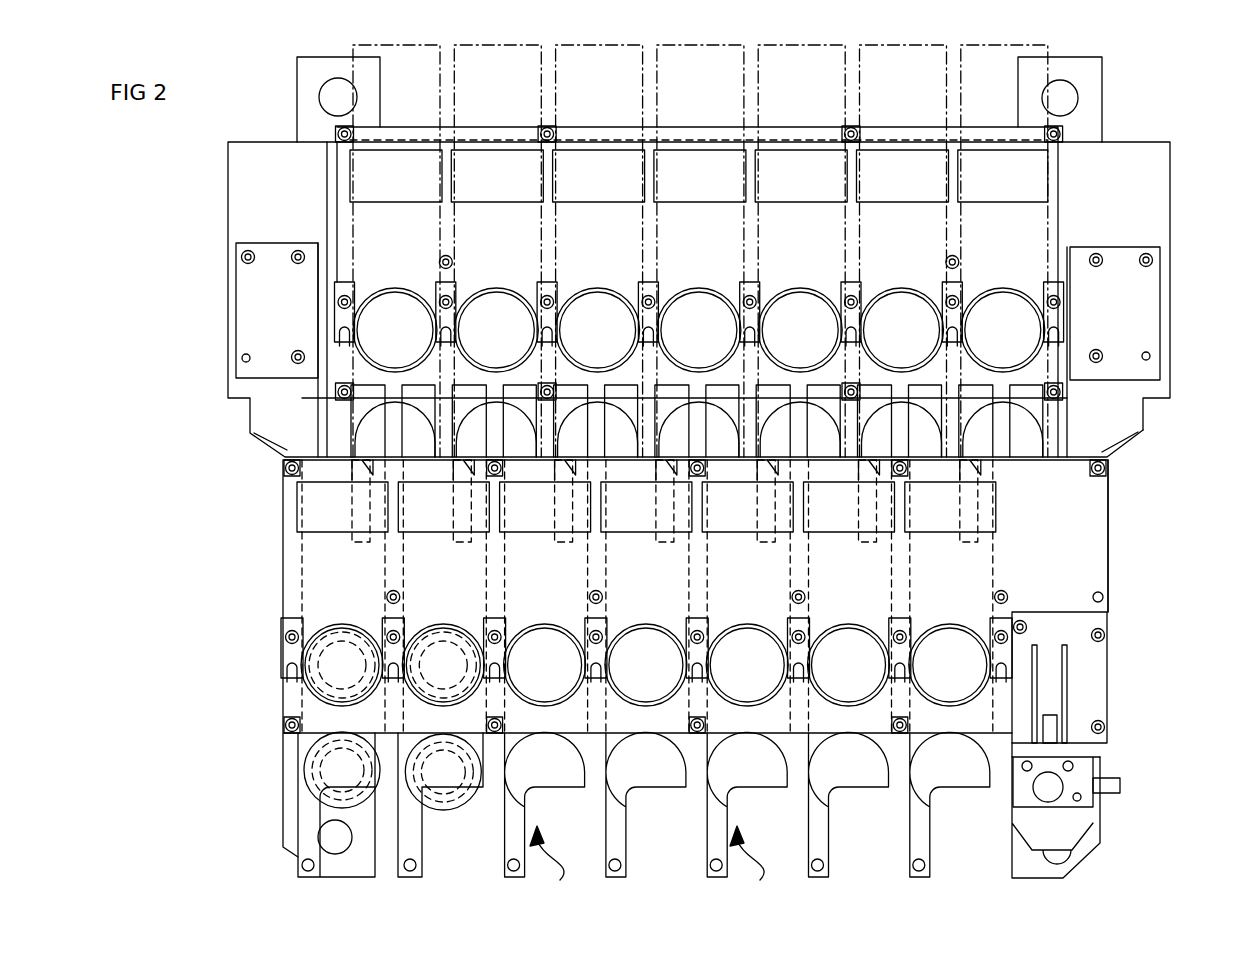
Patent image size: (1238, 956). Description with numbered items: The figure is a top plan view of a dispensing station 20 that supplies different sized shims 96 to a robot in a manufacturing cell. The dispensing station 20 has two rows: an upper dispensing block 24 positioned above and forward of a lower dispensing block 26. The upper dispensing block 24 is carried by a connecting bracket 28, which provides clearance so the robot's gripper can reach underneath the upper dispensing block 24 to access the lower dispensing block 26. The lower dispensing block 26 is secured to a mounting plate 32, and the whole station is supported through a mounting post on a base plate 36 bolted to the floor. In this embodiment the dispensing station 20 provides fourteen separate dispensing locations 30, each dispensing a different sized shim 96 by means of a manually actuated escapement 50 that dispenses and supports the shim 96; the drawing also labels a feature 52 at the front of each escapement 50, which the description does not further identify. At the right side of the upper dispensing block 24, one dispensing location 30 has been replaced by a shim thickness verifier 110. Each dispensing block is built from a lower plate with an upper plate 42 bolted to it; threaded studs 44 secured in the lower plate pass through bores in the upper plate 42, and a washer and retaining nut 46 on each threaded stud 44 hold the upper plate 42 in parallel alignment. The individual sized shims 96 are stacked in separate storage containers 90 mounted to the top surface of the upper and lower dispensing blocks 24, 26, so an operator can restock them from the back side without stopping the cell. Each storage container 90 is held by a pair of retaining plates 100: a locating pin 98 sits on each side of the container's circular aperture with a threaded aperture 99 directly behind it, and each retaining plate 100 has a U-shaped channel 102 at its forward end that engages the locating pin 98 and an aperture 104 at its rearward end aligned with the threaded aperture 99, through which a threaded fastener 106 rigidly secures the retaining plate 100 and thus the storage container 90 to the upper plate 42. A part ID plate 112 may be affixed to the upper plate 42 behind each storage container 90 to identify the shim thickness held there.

The dispensing station 20 is at (246, 468).
The upper dispensing block 24 is at (276, 752).
The lower dispensing block 26 is at (328, 212).
The connecting bracket 28 is at (260, 392).
The dispensing location 30 is at (658, 859).
The mounting plate 32 is at (1153, 233).
The base plate 36 is at (305, 63).
The upper plate 42 is at (1051, 243).
The threaded stud 44 is at (1105, 490).
The retaining nut 46 is at (1105, 467).
The manually actuated escapement 50 is at (720, 97).
The slot 52 is at (563, 782).
The storage container 90 is at (615, 288).
The shim 96 is at (307, 657).
The locating pin 98 is at (452, 334).
The threaded aperture 99 is at (458, 290).
The retaining plate 100 is at (448, 282).
The U-shaped channel 102 is at (432, 348).
The aperture 104 is at (450, 282).
The threaded fastener 106 is at (440, 262).
The shim thickness verifier 110 is at (1068, 830).
The part ID plate 112 is at (363, 160).